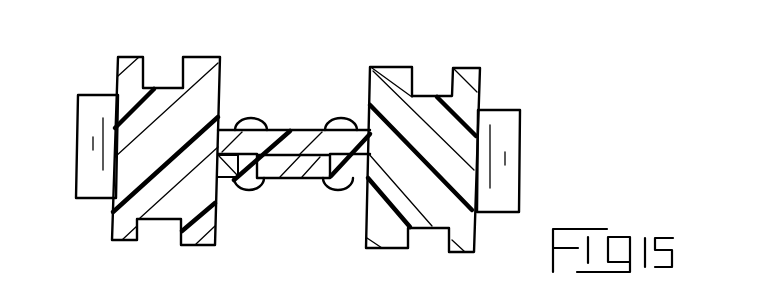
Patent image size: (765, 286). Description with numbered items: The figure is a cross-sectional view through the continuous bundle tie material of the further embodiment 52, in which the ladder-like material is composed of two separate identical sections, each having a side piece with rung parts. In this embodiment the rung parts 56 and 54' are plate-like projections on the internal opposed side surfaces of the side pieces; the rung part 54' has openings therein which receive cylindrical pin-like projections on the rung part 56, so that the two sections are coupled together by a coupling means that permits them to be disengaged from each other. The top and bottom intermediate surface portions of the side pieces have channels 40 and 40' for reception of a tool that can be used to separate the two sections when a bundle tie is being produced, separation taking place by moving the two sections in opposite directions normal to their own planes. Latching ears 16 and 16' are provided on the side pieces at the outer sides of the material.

The further embodiment 52 is at (553, 114).
The channel 40 is at (177, 135).
The channel 40' is at (430, 131).
The latching ear 16 is at (75, 158).
The latching ear 16' is at (535, 161).
The rung part 56 is at (305, 128).
The rung part 54' is at (293, 199).